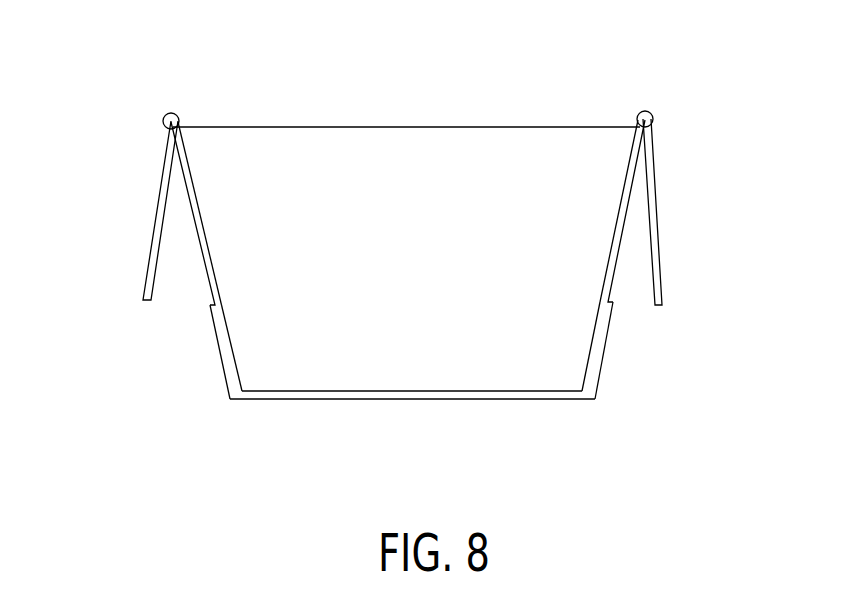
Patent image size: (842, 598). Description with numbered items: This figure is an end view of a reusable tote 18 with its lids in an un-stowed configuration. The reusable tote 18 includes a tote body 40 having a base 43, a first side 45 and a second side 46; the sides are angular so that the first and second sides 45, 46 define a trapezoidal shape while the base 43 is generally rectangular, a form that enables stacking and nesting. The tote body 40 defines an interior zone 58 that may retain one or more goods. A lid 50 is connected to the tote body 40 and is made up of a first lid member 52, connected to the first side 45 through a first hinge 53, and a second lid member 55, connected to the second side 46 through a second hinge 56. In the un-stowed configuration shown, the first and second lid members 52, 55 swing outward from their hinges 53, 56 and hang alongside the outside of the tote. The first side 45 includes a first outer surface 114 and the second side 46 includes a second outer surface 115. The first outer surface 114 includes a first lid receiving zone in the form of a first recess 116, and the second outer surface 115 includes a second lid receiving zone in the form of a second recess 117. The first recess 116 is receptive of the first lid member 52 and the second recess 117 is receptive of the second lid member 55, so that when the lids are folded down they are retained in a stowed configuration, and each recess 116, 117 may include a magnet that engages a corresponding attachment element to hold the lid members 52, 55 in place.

The reusable tote 18 is at (720, 398).
The tote body 40 is at (216, 406).
The base 43 is at (457, 400).
The first side 45 is at (203, 347).
The second side 46 is at (618, 353).
The lid 50 is at (103, 105).
The first lid member 52 is at (158, 192).
The first hinge 53 is at (175, 113).
The second lid member 55 is at (657, 195).
The second hinge 56 is at (648, 112).
The interior zone 58 is at (369, 181).
The first outer surface 114 is at (222, 373).
The second outer surface 115 is at (598, 379).
The first recess 116 is at (203, 253).
The second recess 117 is at (613, 257).